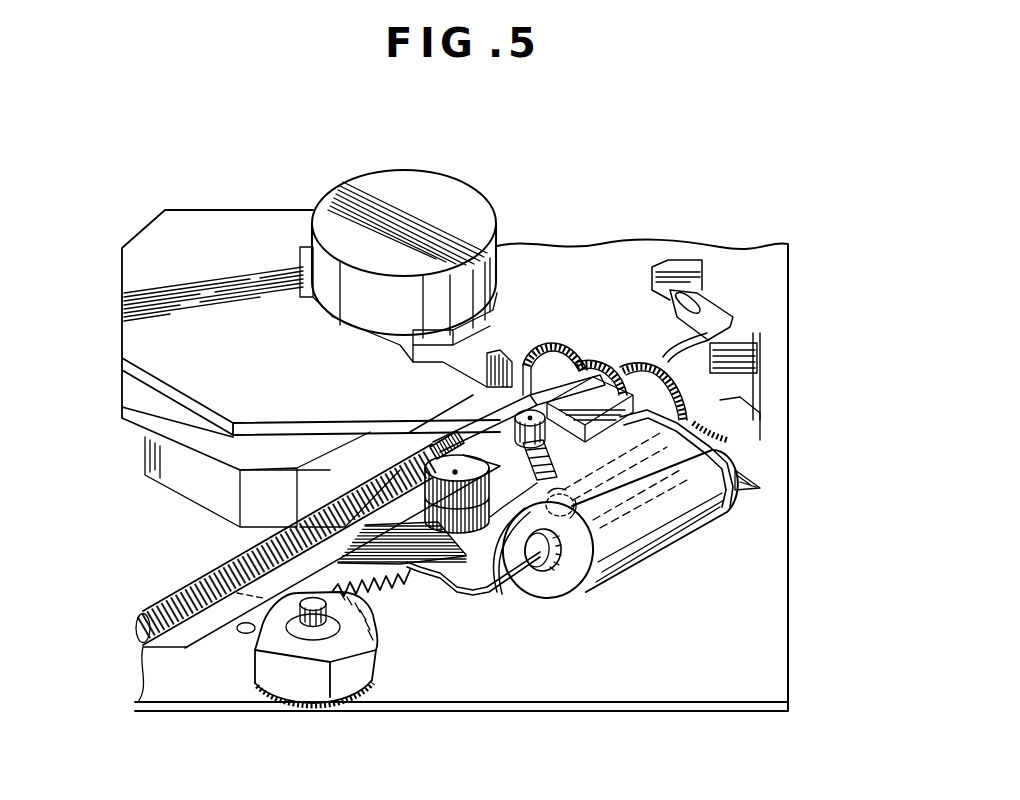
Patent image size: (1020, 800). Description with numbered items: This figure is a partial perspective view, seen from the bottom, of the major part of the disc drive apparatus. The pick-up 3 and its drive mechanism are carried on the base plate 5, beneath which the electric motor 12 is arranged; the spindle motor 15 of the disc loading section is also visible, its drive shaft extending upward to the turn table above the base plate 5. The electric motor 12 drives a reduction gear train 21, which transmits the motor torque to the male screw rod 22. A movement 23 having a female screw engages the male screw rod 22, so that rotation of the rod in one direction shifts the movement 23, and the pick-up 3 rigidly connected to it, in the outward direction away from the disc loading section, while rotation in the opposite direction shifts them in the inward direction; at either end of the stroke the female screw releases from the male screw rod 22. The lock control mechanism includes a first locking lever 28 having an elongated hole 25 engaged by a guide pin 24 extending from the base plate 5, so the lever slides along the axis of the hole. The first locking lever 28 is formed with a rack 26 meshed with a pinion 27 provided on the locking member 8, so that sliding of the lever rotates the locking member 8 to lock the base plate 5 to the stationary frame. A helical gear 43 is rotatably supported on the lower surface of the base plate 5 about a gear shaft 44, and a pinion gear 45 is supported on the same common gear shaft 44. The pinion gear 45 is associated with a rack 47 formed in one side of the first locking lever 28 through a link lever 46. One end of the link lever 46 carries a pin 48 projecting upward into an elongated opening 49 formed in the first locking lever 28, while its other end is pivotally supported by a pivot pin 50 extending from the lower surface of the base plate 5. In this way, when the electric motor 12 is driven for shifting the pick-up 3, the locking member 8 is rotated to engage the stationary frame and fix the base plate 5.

The pick-up 3 is at (223, 228).
The base plate 5 is at (732, 712).
The locking member 8 is at (305, 672).
The electric motor 12 is at (672, 532).
The spindle motor 15 is at (452, 200).
The reduction gear train 21 is at (611, 357).
The male screw rod 22 is at (180, 605).
The movement 23 is at (470, 425).
The guide pin 24 is at (263, 598).
The elongated hole 25 is at (280, 562).
The rack 26 is at (380, 588).
The pinion 27 is at (333, 700).
The first locking lever 28 is at (470, 598).
The helical gear 43 is at (430, 447).
The gear shaft 44 is at (455, 472).
The pinion gear 45 is at (355, 482).
The link lever 46 is at (558, 475).
The rack 47 is at (516, 568).
The pin 48 is at (566, 507).
The elongated opening 49 is at (700, 410).
The pivot pin 50 is at (531, 416).